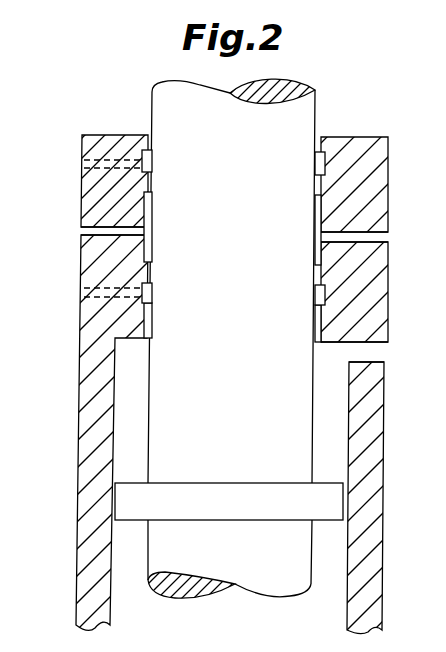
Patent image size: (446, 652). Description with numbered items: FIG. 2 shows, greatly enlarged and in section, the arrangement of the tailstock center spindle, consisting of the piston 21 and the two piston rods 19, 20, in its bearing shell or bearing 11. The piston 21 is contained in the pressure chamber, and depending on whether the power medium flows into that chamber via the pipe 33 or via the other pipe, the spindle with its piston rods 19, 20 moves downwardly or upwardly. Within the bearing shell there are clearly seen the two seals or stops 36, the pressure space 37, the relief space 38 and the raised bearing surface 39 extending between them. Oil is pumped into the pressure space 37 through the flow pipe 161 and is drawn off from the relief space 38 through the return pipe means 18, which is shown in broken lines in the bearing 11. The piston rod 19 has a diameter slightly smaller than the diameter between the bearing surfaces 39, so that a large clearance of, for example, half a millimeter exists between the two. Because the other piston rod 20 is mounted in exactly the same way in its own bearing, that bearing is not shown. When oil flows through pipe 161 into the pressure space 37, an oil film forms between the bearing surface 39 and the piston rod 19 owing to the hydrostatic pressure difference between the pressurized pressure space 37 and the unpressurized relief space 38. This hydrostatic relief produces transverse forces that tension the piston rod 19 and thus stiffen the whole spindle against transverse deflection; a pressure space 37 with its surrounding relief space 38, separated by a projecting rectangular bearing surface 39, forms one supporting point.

The bearing 11 is at (375, 400).
The return pipe means 18 is at (82, 163).
The piston rod 19 is at (160, 108).
The piston rod 20 is at (170, 588).
The piston 21 is at (137, 509).
The pipe 33 is at (430, 353).
The seals 36 is at (324, 140).
The pressure space 37 is at (323, 207).
The relief space 38 is at (365, 137).
The bearing surface 39 is at (345, 172).
The flow pipe 161 is at (70, 232).